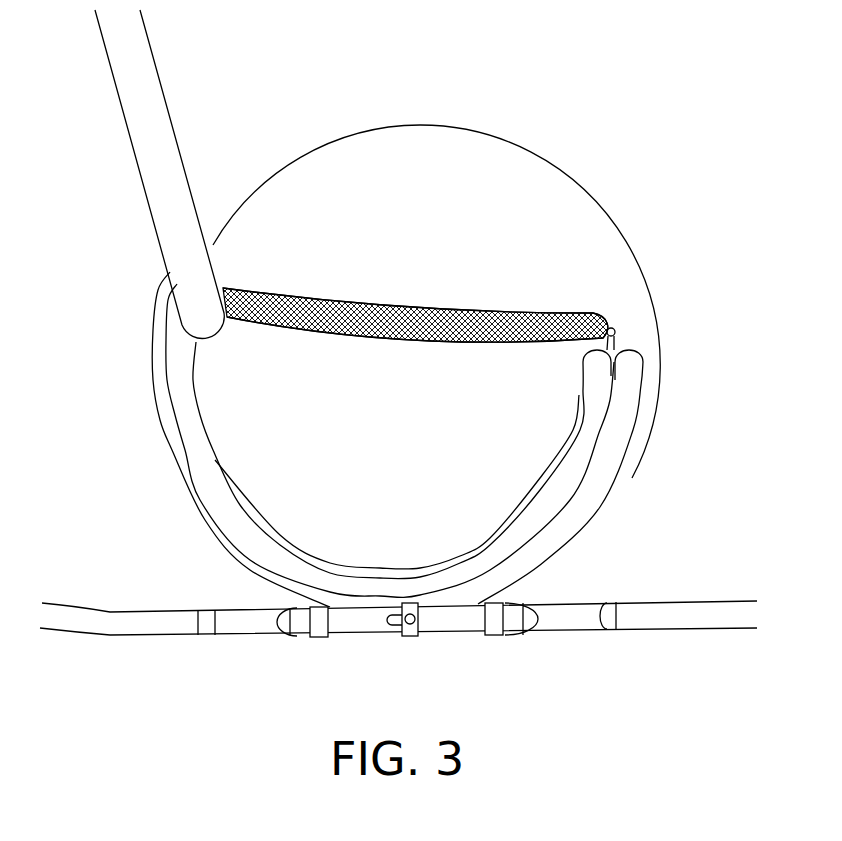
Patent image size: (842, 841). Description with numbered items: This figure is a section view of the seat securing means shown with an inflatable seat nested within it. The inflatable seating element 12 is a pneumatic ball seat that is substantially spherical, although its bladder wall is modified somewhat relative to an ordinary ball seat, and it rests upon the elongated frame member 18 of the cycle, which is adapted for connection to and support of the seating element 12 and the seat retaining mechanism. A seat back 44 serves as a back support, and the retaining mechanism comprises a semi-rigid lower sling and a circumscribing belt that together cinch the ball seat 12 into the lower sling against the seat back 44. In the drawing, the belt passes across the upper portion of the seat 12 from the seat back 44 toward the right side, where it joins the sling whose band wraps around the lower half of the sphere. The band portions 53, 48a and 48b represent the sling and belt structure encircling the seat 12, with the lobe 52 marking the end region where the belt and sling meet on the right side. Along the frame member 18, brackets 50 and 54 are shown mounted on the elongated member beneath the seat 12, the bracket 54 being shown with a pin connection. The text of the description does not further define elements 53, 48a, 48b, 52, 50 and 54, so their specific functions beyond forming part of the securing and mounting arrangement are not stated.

The inflatable seating element 12 is at (492, 186).
The seat back 44 is at (140, 183).
The retaining band 53 is at (136, 297).
The first band portion 48a is at (297, 423).
The second band portion 48b is at (672, 403).
The band end lobe 52 is at (612, 455).
The rail bracket 50 is at (232, 550).
The pin bracket 54 is at (422, 638).
The frame member 18 is at (703, 630).